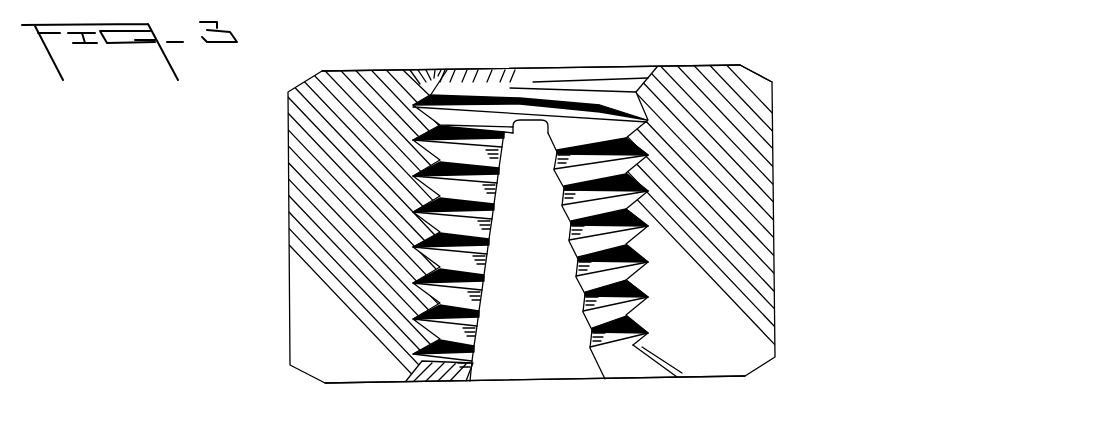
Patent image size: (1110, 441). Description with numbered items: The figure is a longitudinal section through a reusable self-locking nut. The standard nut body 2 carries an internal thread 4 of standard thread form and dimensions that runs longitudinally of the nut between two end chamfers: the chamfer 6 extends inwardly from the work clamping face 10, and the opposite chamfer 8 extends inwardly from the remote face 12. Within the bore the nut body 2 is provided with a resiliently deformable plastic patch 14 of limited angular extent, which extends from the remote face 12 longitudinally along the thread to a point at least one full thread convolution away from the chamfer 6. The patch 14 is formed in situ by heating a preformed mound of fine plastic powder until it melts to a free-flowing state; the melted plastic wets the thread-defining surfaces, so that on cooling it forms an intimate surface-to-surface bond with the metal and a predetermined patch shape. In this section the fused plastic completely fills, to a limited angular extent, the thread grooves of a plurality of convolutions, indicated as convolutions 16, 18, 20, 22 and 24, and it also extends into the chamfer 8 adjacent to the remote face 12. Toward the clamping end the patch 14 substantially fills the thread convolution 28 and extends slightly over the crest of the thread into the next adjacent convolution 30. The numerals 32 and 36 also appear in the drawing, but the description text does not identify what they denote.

The nut body 2 is at (723, 380).
The internal thread 4 is at (653, 237).
The end chamfer 6 is at (638, 77).
The end chamfer 8 is at (637, 365).
The work clamping face 10 is at (700, 68).
The remote face 12 is at (673, 377).
The plastic patch 14 is at (528, 357).
The thread convolution 16 is at (435, 184).
The thread convolution 18 is at (441, 216).
The thread convolution 20 is at (435, 243).
The thread convolution 22 is at (433, 293).
The thread convolution 24 is at (420, 350).
The thread convolution 28 is at (437, 148).
The thread convolution 30 is at (421, 120).
The bolt tip 32 is at (530, 128).
The element 36 is at (158, 437).